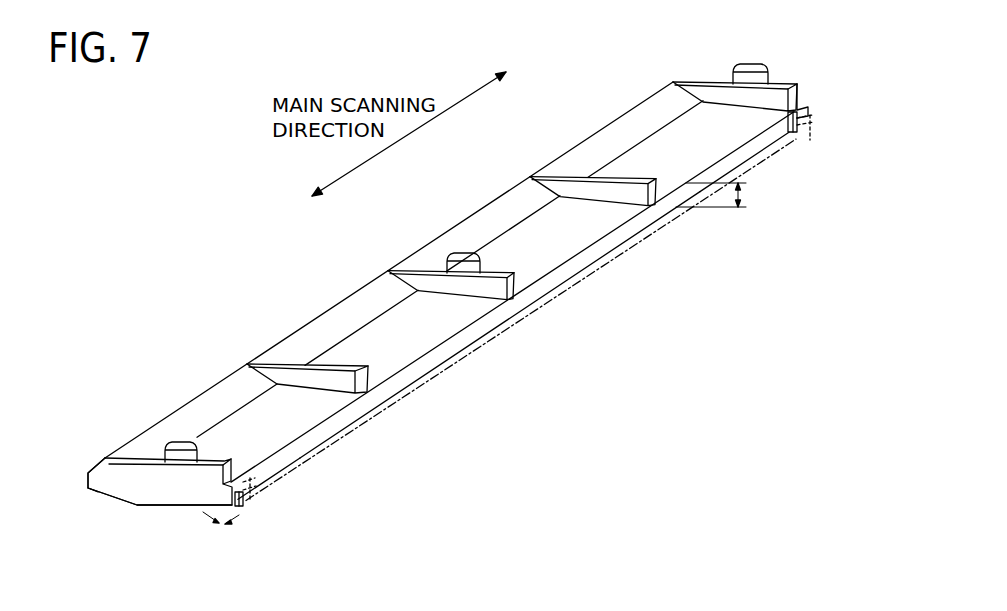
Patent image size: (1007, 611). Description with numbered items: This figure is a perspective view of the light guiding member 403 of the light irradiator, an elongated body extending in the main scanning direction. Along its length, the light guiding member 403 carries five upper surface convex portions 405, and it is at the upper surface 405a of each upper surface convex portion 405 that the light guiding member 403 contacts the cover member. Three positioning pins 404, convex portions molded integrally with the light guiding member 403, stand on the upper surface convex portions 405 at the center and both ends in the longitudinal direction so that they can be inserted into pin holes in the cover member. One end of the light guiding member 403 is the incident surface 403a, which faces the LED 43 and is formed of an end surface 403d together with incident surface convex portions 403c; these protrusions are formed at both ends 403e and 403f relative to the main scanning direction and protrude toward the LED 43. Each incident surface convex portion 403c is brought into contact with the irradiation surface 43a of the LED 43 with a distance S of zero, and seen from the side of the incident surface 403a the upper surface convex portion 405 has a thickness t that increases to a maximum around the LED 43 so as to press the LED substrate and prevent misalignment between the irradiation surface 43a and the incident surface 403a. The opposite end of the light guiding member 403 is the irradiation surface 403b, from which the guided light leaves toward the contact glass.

The light guiding member 403 is at (270, 247).
The incident surface 403a is at (806, 284).
The irradiation surface 403b is at (102, 466).
The incident surface convex portion 403c is at (792, 130).
The end surface 403d is at (555, 276).
The end relative to the main scanning direction 403e is at (178, 511).
The end relative to the main scanning direction 403f is at (781, 76).
The positioning pin 404 is at (178, 441).
The upper surface convex portion 405 is at (124, 490).
The upper surface 405a is at (134, 462).
The LED 43 is at (257, 512).
The irradiation surface 43a is at (243, 478).